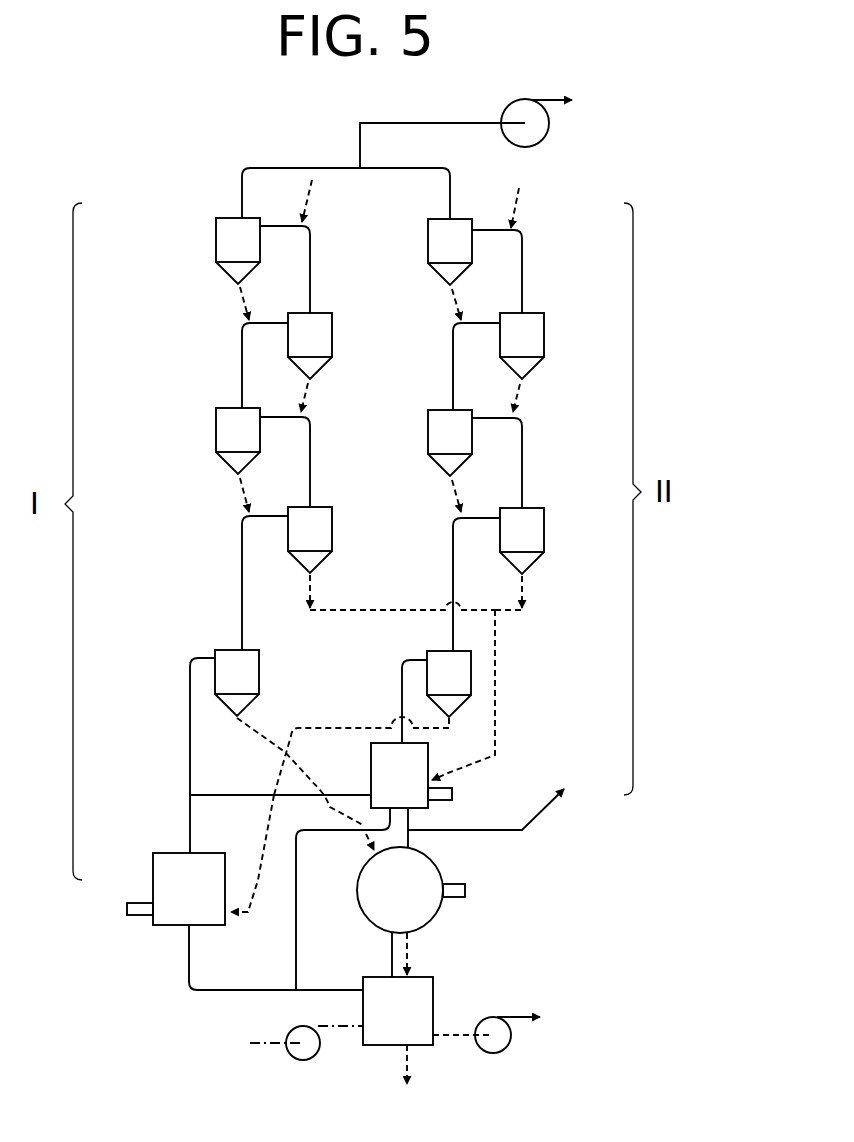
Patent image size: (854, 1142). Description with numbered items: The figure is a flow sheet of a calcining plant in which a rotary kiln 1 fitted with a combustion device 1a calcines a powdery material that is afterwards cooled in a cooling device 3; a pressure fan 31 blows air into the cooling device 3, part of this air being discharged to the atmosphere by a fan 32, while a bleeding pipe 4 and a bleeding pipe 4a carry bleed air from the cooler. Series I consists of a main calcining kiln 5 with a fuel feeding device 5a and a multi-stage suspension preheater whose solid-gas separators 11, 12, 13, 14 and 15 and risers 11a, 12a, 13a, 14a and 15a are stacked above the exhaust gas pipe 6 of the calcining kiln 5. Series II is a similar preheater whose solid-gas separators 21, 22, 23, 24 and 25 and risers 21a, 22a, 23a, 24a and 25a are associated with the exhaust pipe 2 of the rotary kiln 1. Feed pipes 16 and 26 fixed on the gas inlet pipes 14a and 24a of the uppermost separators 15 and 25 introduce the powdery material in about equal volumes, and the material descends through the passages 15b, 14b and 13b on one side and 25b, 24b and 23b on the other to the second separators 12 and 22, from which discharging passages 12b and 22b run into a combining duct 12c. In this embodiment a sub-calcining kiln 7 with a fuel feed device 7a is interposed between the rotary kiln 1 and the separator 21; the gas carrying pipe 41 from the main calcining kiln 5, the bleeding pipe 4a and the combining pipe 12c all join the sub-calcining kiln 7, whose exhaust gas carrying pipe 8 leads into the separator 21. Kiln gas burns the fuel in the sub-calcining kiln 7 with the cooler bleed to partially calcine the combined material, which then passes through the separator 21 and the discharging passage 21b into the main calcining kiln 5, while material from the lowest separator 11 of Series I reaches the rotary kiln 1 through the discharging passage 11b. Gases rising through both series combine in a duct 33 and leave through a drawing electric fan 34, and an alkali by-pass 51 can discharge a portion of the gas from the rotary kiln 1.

The rotary kiln 1 is at (400, 890).
The combustion device 1a is at (465, 890).
The exhaust pipe 2 is at (412, 838).
The cooling device 3 is at (398, 1008).
The bleeding pipe 4 is at (252, 990).
The bleeding pipe 4a is at (297, 932).
The calcining kiln 5 is at (189, 889).
The fuel feeding device 5a is at (143, 915).
The exhaust gas pipe 6 is at (190, 733).
The sub-calcining kiln 7 is at (399, 775).
The feed device 7a is at (452, 795).
The exhaust gas carrying pipe 8 is at (402, 690).
The solid-gas separator 11 is at (237, 683).
The riser 11a is at (242, 570).
The powdery material discharging passage 11b is at (240, 722).
The solid-gas separator 12 is at (310, 540).
The riser 12a is at (310, 465).
The powdery material discharging passage 12b is at (311, 587).
The combining duct 12c is at (496, 697).
The solid-gas separator 13 is at (238, 441).
The riser 13a is at (242, 375).
The raw material chute 13b is at (240, 490).
The solid-gas separator 14 is at (310, 346).
The riser 14a is at (310, 275).
The raw material chute 14b is at (312, 396).
The solid-gas separator 15 is at (238, 251).
The riser 15a is at (242, 193).
The raw material chute 15b is at (238, 290).
The feed pipe 16 is at (308, 200).
The solid-gas separator 21 is at (449, 684).
The riser 21a is at (453, 570).
The powdery material discharging passage 21b is at (332, 728).
The solid-gas separator 22 is at (522, 541).
The riser 22a is at (522, 465).
The powdery material discharging passage 22b is at (524, 587).
The solid-gas separator 23 is at (450, 443).
The riser 23a is at (453, 375).
The raw material chute 23b is at (455, 493).
The solid-gas separator 24 is at (522, 346).
The riser 24a is at (522, 275).
The raw material chute 24b is at (524, 398).
The solid-gas separator 25 is at (450, 252).
The riser 25a is at (450, 193).
The raw material chute 25b is at (452, 297).
The feed pipe 26 is at (521, 205).
The pressure fan 31 is at (315, 1052).
The fan 32 is at (503, 1052).
The duct 33 is at (360, 135).
The drawing electric fan 34 is at (549, 127).
The gas carrying pipe 41 is at (243, 797).
The alkali by-pass 51 is at (541, 814).